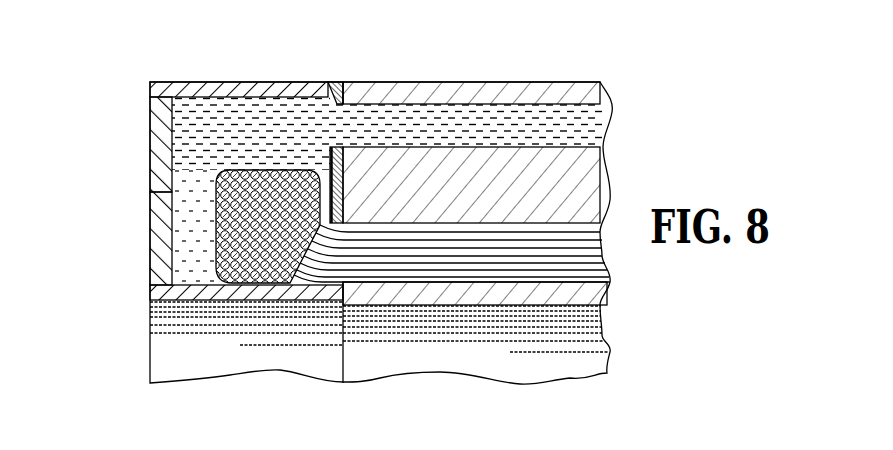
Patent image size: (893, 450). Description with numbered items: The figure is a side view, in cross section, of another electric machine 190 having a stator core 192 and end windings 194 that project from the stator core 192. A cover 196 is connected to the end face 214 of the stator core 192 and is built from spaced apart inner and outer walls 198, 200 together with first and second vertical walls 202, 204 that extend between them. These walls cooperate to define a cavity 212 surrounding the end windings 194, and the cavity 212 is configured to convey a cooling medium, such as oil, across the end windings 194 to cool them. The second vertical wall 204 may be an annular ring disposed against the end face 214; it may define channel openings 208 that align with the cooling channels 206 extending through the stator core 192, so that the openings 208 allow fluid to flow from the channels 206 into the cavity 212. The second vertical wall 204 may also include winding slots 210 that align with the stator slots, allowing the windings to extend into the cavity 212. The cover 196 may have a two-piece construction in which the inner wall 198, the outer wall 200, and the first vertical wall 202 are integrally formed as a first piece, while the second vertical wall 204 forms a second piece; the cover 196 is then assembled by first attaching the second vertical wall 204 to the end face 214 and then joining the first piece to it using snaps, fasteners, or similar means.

The electric machine 190 is at (553, 36).
The stator core 192 is at (527, 82).
The end windings 194 is at (252, 290).
The cover 196 is at (150, 172).
The inner wall 198 is at (177, 306).
The outer wall 200 is at (210, 82).
The first vertical wall 202 is at (150, 242).
The second vertical wall 204 is at (343, 200).
The cooling channels 206 is at (556, 113).
The channel openings 208 is at (333, 106).
The winding slots 210 is at (343, 273).
The cavity 212 is at (181, 145).
The end face 214 is at (343, 82).